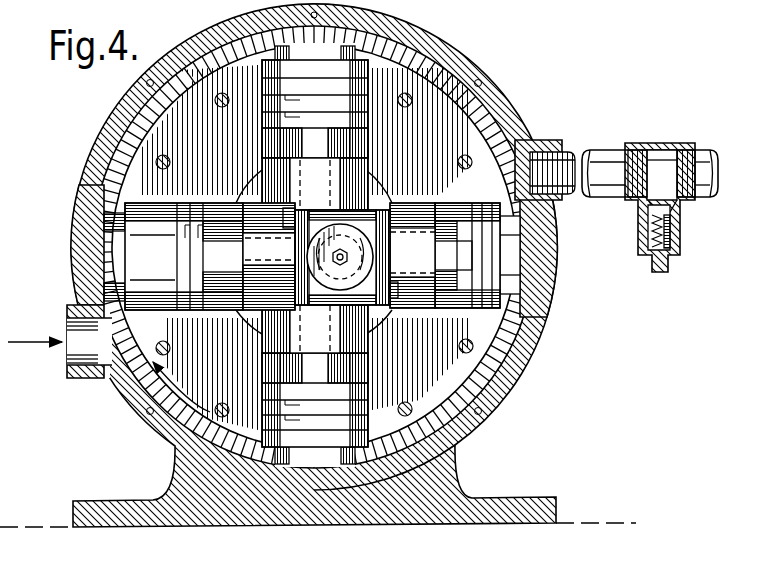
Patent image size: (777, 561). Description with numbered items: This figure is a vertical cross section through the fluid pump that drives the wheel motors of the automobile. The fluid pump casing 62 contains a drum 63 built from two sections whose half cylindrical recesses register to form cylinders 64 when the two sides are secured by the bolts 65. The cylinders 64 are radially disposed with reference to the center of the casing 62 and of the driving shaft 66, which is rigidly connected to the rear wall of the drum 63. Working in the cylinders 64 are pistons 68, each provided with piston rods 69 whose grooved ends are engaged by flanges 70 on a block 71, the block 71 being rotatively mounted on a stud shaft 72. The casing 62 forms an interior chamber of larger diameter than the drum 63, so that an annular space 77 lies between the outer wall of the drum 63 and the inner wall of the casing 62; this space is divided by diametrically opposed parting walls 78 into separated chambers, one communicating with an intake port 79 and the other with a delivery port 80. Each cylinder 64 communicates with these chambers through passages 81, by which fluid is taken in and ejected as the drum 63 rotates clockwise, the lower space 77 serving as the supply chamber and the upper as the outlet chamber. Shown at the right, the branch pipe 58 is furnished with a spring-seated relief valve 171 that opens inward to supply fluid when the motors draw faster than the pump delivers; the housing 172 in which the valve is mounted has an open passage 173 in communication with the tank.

The branch pipe 58 is at (600, 153).
The fluid pump casing 62 is at (493, 110).
The drum 63 is at (462, 386).
The cylinders 64 is at (360, 168).
The bolts 65 is at (408, 106).
The driving shaft 66 is at (342, 257).
The pistons 68 is at (276, 130).
The piston rods 69 is at (428, 251).
The flanges 70 is at (290, 230).
The block 71 is at (347, 246).
The stud shaft 72 is at (350, 271).
The annular space 77 is at (437, 62).
The parting walls 78 is at (100, 236).
The intake port 79 is at (78, 350).
The delivery port 80 is at (525, 157).
The passages 81 is at (358, 56).
The spring-seated relief valve 171 is at (650, 210).
The housing 172 is at (672, 237).
The open passage 173 is at (650, 240).